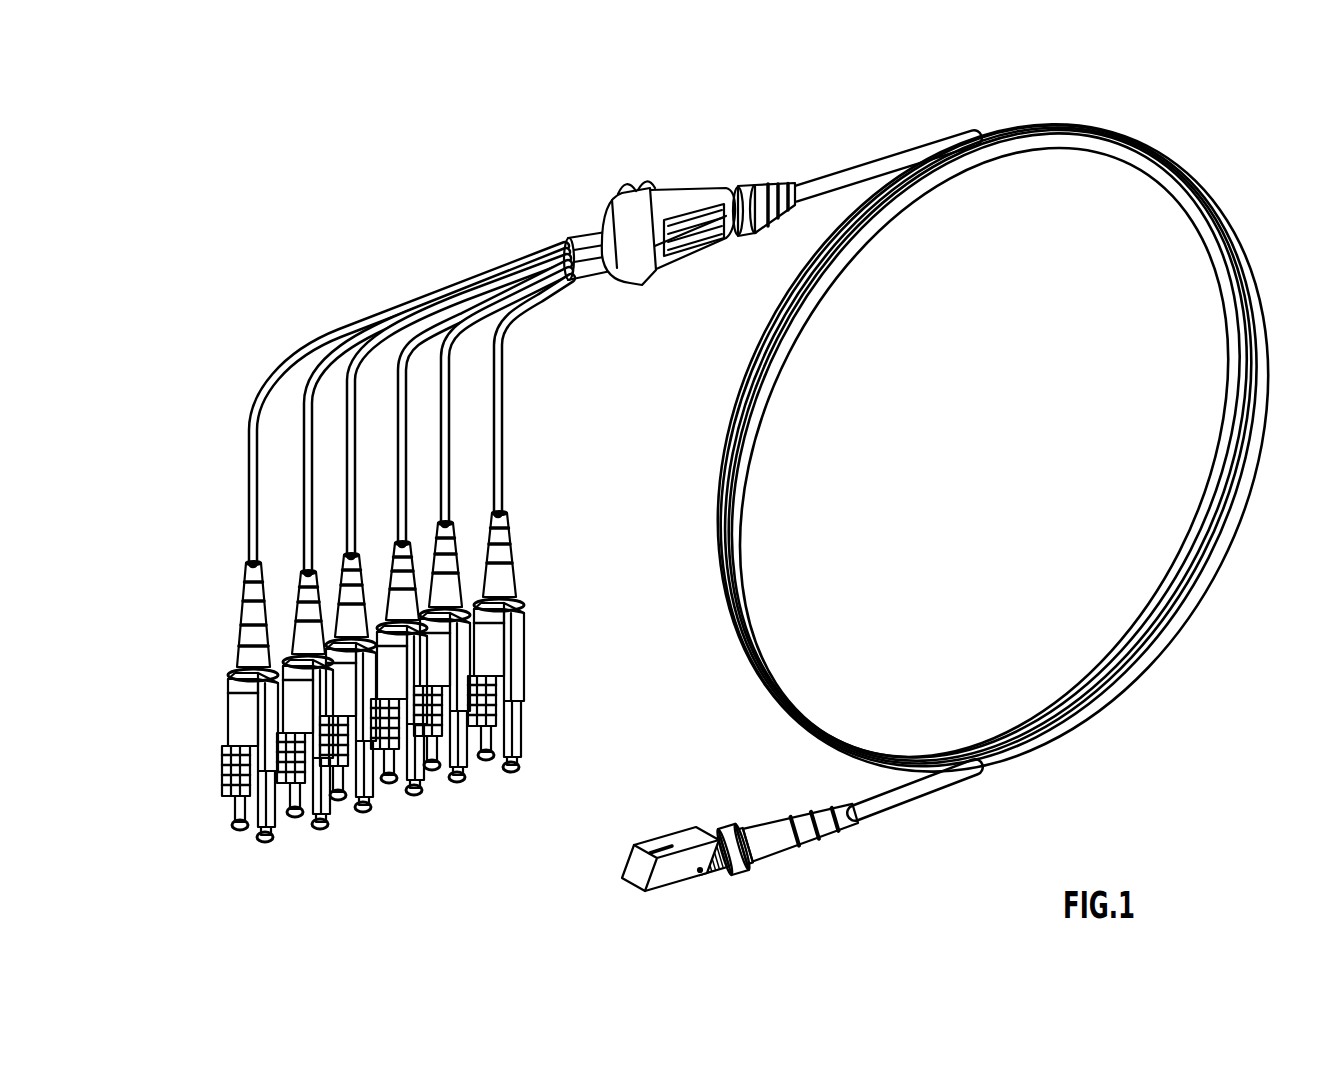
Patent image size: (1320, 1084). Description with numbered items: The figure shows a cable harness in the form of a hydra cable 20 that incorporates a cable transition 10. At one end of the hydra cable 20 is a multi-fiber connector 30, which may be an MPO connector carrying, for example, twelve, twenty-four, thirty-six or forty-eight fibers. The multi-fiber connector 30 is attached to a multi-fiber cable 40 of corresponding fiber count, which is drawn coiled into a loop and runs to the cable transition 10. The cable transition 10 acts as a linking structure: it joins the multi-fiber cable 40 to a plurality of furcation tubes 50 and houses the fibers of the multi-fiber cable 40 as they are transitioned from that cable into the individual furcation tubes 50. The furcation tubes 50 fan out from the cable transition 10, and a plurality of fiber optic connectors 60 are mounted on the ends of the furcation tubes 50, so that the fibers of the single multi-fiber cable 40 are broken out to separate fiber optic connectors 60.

The cable transition 10 is at (607, 193).
The hydra cable 20 is at (1174, 150).
The multi-fiber connector 30 is at (837, 848).
The multi-fiber cable 40 is at (1175, 668).
The furcation tubes 50 is at (352, 298).
The fiber optic connectors 60 is at (215, 582).